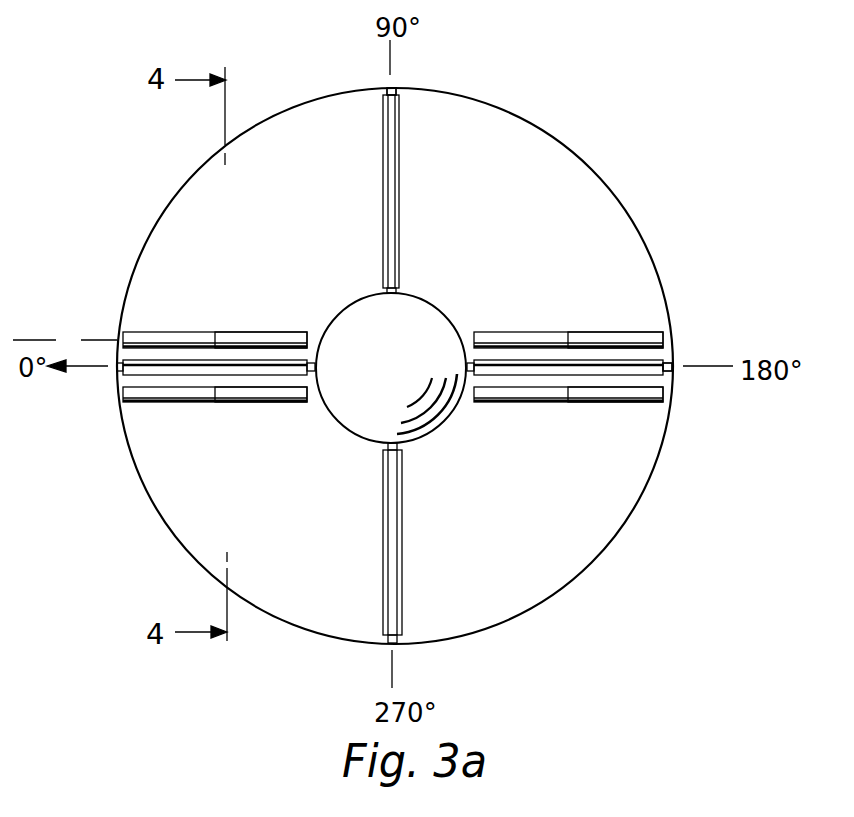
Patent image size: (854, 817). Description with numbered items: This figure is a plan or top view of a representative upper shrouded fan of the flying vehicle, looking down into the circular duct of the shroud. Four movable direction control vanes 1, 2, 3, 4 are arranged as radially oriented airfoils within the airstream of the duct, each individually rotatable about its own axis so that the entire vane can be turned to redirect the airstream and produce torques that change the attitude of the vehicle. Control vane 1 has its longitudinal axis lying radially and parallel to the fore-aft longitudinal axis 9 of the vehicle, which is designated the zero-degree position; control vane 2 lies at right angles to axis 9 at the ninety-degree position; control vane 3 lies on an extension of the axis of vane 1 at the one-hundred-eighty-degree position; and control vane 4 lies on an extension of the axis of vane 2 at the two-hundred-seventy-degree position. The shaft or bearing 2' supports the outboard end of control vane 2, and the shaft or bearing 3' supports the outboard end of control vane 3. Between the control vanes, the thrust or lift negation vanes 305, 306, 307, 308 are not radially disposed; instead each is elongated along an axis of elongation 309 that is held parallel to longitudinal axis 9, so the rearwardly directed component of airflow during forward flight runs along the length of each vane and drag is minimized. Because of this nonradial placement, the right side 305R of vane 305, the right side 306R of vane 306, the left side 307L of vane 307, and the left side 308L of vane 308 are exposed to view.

The control vane 1 is at (117, 381).
The control vane 2 is at (406, 190).
The shaft or bearing 2' is at (406, 69).
The control vane 3 is at (569, 328).
The shaft or bearing 3' is at (690, 344).
The control vane 4 is at (402, 553).
The longitudinal axis 9 is at (73, 368).
The thrust negation vane 305 is at (173, 332).
The right side of lift negation vane 305R is at (256, 332).
The thrust negation vane 306 is at (493, 332).
The right side of lift negation vane 306R is at (560, 332).
The thrust negation vane 307 is at (519, 402).
The left side of lift negation vane 307L is at (593, 402).
The thrust negation vane 308 is at (187, 402).
The left side of lift negation vane 308L is at (278, 402).
The axis of elongation 309 is at (68, 340).